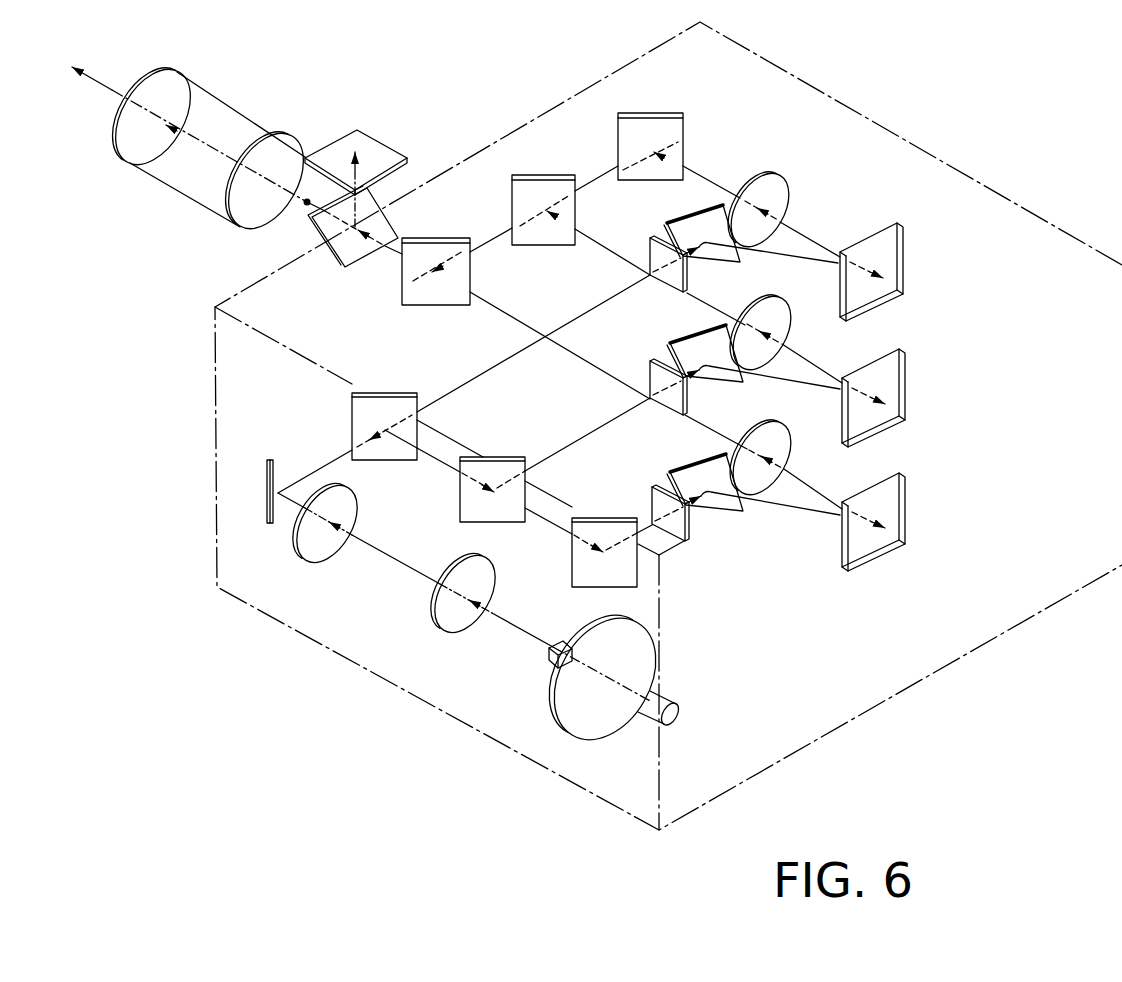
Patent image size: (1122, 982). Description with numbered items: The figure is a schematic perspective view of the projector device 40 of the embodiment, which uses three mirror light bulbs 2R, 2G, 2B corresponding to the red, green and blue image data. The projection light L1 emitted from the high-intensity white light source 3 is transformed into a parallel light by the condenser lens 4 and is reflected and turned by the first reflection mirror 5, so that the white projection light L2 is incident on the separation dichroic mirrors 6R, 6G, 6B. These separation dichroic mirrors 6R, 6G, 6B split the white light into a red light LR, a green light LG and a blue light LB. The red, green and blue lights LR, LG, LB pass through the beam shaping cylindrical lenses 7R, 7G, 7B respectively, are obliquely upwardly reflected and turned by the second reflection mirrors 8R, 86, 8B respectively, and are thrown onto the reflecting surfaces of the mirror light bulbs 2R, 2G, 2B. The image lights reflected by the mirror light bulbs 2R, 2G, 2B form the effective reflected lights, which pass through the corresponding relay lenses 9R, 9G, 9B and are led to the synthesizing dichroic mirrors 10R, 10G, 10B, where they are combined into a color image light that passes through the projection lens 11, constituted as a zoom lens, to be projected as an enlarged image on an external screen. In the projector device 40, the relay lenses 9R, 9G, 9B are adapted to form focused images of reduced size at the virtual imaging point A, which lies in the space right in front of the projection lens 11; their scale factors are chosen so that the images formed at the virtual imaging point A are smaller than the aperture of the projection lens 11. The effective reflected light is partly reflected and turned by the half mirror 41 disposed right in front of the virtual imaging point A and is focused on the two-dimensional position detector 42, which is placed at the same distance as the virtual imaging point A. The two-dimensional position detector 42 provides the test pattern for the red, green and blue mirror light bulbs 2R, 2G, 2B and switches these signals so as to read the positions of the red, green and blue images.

The mirror light bulb 2R is at (903, 246).
The mirror light bulb 2G is at (903, 353).
The mirror light bulb 2B is at (905, 491).
The high-intensity white light source 3 is at (610, 735).
The condenser lens 4 is at (356, 589).
The first reflection mirror 5 is at (266, 467).
The separation dichroic mirror 6R is at (392, 393).
The separation dichroic mirror 6G is at (510, 457).
The separation dichroic mirror 6B is at (610, 518).
The beam shaping cylindrical lens 7R is at (648, 272).
The beam shaping cylindrical lens 7G is at (648, 397).
The beam shaping cylindrical lens 7B is at (652, 488).
The second reflection mirror 8R is at (667, 222).
The second reflection mirror 86 is at (672, 342).
The second reflection mirror 8B is at (698, 463).
The relay lens 9R is at (780, 176).
The relay lens 9G is at (784, 302).
The relay lens 9B is at (780, 427).
The synthesizing dichroic mirror 10R is at (666, 114).
The synthesizing dichroic mirror 10G is at (537, 176).
The synthesizing dichroic mirror 10B is at (433, 238).
The projection lens 11 is at (254, 97).
The projector device 40 is at (858, 105).
The half mirror 41 is at (332, 262).
The two-dimensional position detector 42 is at (393, 149).
The virtual imaging point A is at (305, 205).
The projection light L1 is at (517, 628).
The projection light L2 is at (300, 506).
The red light LR is at (500, 362).
The green light LG is at (593, 433).
The blue light LB is at (667, 547).